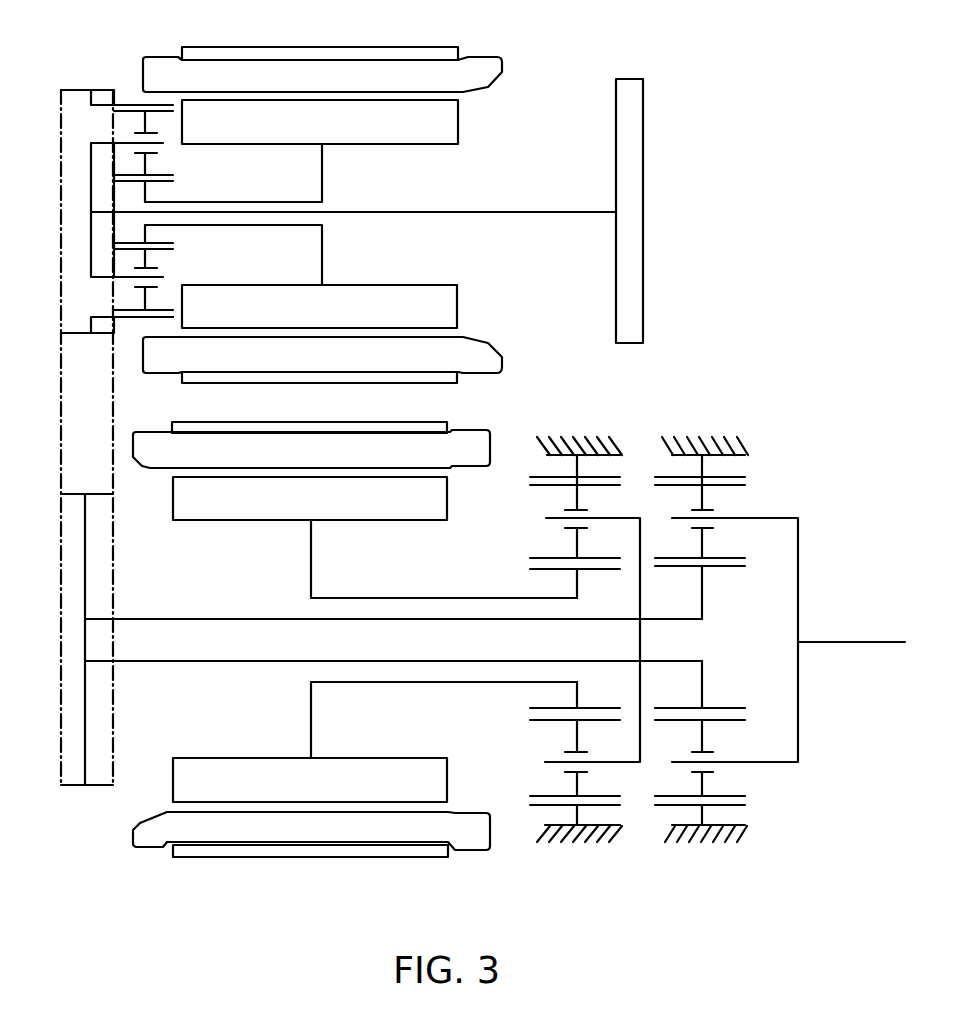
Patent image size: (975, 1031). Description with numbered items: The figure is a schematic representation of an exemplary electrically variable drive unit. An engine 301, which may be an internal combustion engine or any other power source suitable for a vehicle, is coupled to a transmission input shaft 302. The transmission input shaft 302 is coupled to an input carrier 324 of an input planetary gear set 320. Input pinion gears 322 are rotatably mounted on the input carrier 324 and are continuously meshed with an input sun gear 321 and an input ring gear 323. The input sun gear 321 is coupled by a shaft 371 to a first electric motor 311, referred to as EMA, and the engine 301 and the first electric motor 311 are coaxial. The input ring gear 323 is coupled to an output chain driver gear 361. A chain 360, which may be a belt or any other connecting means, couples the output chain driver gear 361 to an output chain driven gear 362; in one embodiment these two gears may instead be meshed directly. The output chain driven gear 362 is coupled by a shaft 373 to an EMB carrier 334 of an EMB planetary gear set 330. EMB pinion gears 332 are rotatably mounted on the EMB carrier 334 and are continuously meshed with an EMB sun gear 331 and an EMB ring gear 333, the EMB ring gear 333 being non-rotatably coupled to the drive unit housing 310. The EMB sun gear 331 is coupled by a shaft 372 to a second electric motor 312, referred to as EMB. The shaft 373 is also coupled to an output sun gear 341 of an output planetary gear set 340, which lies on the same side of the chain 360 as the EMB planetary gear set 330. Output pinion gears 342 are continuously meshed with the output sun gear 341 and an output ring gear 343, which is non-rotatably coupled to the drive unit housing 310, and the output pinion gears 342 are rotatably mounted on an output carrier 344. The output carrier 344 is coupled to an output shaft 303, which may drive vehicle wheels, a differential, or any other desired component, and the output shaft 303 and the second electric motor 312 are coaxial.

The engine 301 is at (644, 112).
The transmission input shaft 302 is at (500, 211).
The output shaft 303 is at (860, 641).
The drive unit housing 310 is at (578, 860).
The first electric motor 311 is at (482, 56).
The second electric motor 312 is at (140, 822).
The input planetary gear set 320 is at (161, 164).
The input sun gear 321 is at (157, 181).
The input pinion gears 322 is at (148, 163).
The input ring gear 323 is at (167, 107).
The input carrier 324 is at (90, 182).
The EMB planetary gear set 330 is at (601, 653).
The EMB sun gear 331 is at (585, 574).
The EMB pinion gears 332 is at (577, 546).
The EMB ring gear 333 is at (612, 475).
The EMB carrier 334 is at (641, 545).
The output planetary gear set 340 is at (755, 642).
The output sun gear 341 is at (705, 603).
The output pinion gears 342 is at (705, 548).
The output ring gear 343 is at (736, 473).
The output carrier 344 is at (799, 712).
The chain 360 is at (112, 431).
The output chain driver gear 361 is at (76, 89).
The output chain driven gear 362 is at (82, 492).
The shaft 371 is at (278, 194).
The shaft 372 is at (432, 682).
The shaft 373 is at (213, 660).